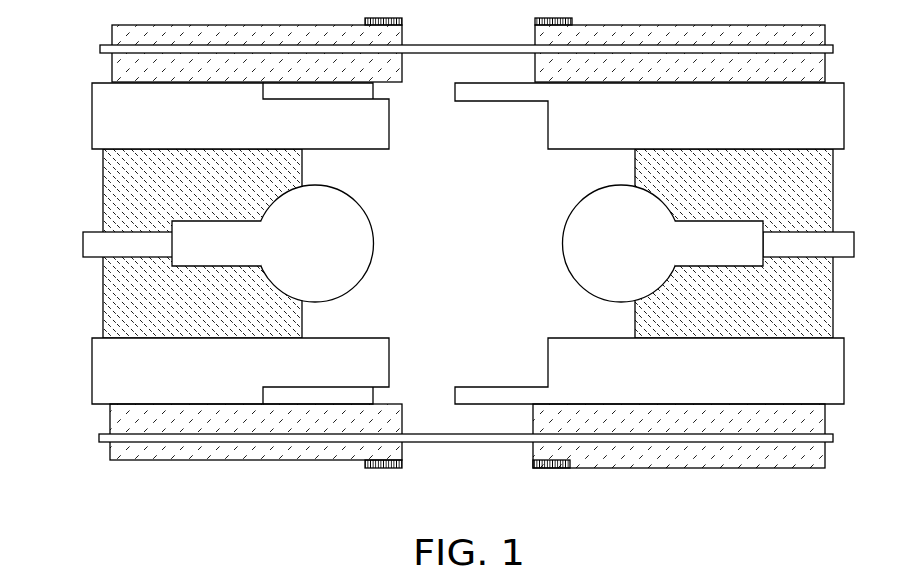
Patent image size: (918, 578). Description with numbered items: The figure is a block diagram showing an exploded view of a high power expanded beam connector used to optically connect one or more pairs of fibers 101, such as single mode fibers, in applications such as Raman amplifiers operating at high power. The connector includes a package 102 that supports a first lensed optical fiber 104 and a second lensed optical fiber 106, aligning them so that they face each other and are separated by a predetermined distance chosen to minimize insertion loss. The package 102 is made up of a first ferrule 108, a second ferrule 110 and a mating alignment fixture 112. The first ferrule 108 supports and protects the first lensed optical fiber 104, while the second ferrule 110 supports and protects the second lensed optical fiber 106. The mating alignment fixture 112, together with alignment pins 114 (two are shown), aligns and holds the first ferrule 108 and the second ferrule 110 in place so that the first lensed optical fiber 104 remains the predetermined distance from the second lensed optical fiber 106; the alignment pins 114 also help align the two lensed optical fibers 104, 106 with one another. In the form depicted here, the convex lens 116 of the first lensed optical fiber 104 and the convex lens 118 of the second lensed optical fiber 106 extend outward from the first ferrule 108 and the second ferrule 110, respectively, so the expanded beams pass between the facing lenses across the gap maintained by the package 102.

The fibers 101 is at (80, 241).
The package 102 is at (95, 26).
The first lensed optical fiber 104 is at (357, 207).
The second lensed optical fiber 106 is at (577, 284).
The first ferrule 108 is at (305, 318).
The second ferrule 110 is at (634, 320).
The mating alignment fixture 112 is at (392, 107).
The alignment pins 114 is at (466, 44).
The convex lens 116 is at (298, 253).
The convex lens 118 is at (639, 253).